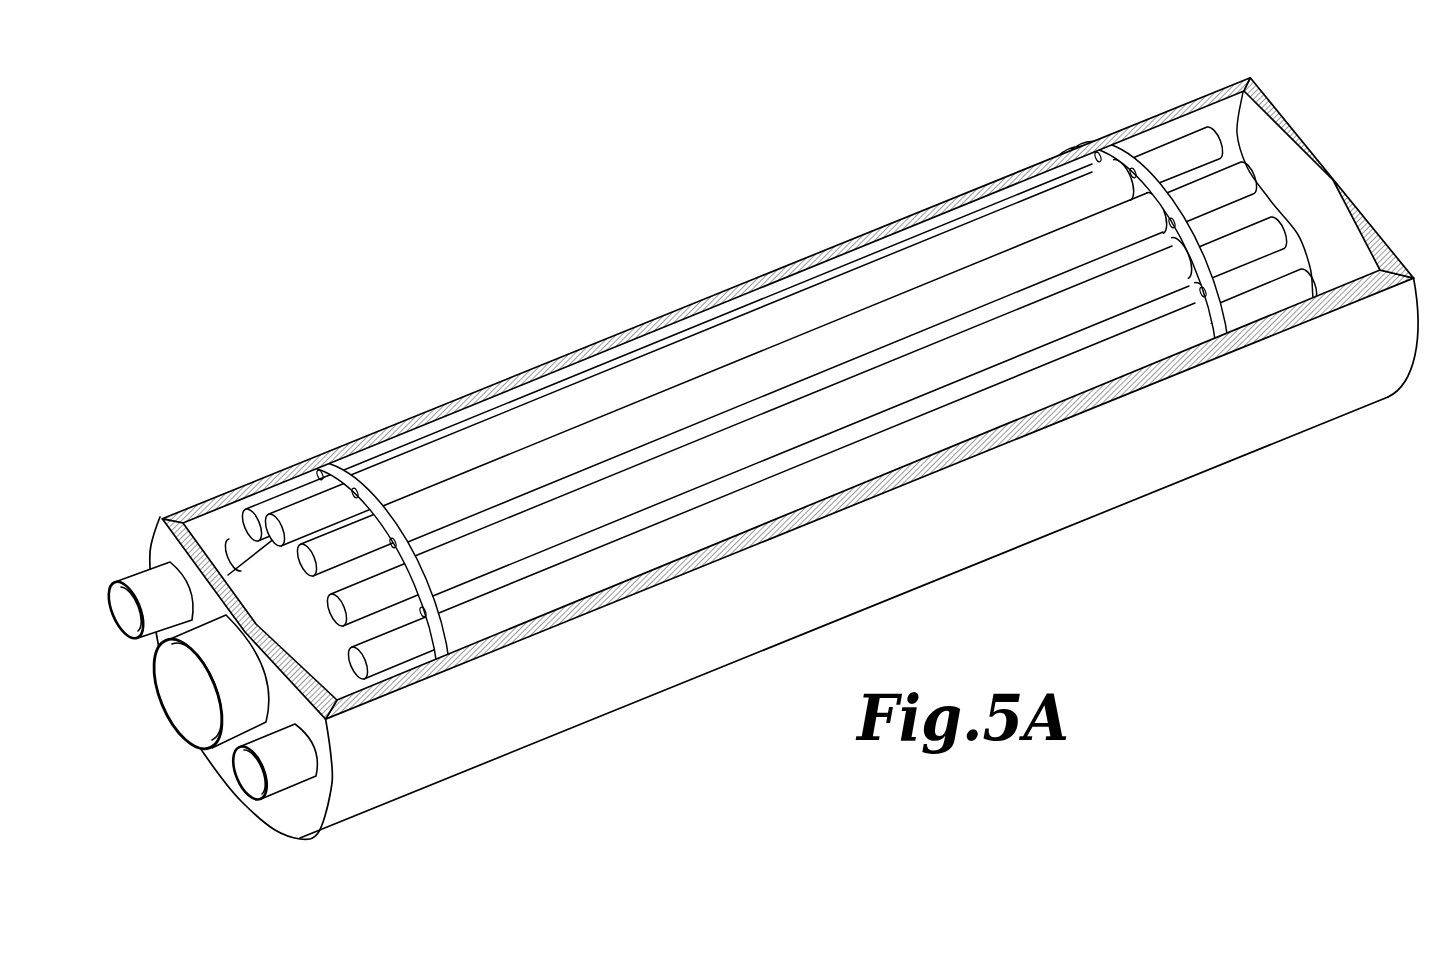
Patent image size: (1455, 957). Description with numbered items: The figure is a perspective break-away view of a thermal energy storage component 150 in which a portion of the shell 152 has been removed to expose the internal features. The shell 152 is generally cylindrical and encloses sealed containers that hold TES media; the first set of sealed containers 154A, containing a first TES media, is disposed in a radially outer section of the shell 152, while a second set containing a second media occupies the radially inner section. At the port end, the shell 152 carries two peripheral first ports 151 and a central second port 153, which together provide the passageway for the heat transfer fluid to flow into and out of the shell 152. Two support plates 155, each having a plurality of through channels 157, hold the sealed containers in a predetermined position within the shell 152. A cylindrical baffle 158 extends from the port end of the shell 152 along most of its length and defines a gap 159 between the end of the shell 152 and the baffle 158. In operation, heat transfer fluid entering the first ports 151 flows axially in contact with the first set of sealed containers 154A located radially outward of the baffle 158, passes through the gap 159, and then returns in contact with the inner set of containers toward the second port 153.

The TES component 150 is at (768, 466).
The peripheral first ports 151 is at (135, 582).
The shell 152 is at (975, 175).
The central second port 153 is at (224, 735).
The first set of sealed containers 154A is at (712, 352).
The support plates 155 is at (367, 487).
The through channels 157 is at (350, 495).
The cylindrical baffle 158 is at (265, 572).
The gap 159 is at (1313, 262).